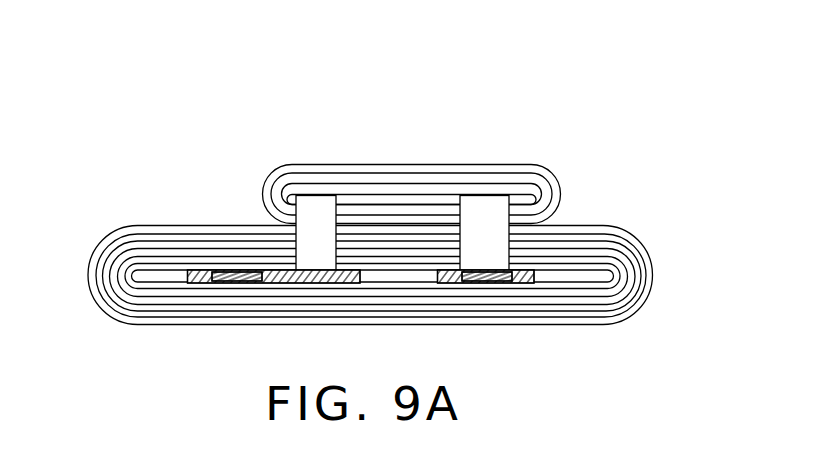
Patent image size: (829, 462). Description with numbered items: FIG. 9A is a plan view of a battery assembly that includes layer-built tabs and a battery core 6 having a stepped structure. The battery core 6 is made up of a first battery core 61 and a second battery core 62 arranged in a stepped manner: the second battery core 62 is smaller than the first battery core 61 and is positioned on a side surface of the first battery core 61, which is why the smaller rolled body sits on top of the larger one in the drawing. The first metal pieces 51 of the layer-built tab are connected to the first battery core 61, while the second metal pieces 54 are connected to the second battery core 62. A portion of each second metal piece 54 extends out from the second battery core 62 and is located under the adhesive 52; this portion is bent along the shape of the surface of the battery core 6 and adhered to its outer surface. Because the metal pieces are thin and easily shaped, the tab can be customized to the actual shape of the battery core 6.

The battery core 6 is at (379, 192).
The first battery core 61 is at (614, 243).
The second battery core 62 is at (423, 166).
The second metal piece 54 is at (313, 202).
The first metal piece 51 is at (229, 273).
The adhesive 52 is at (201, 283).